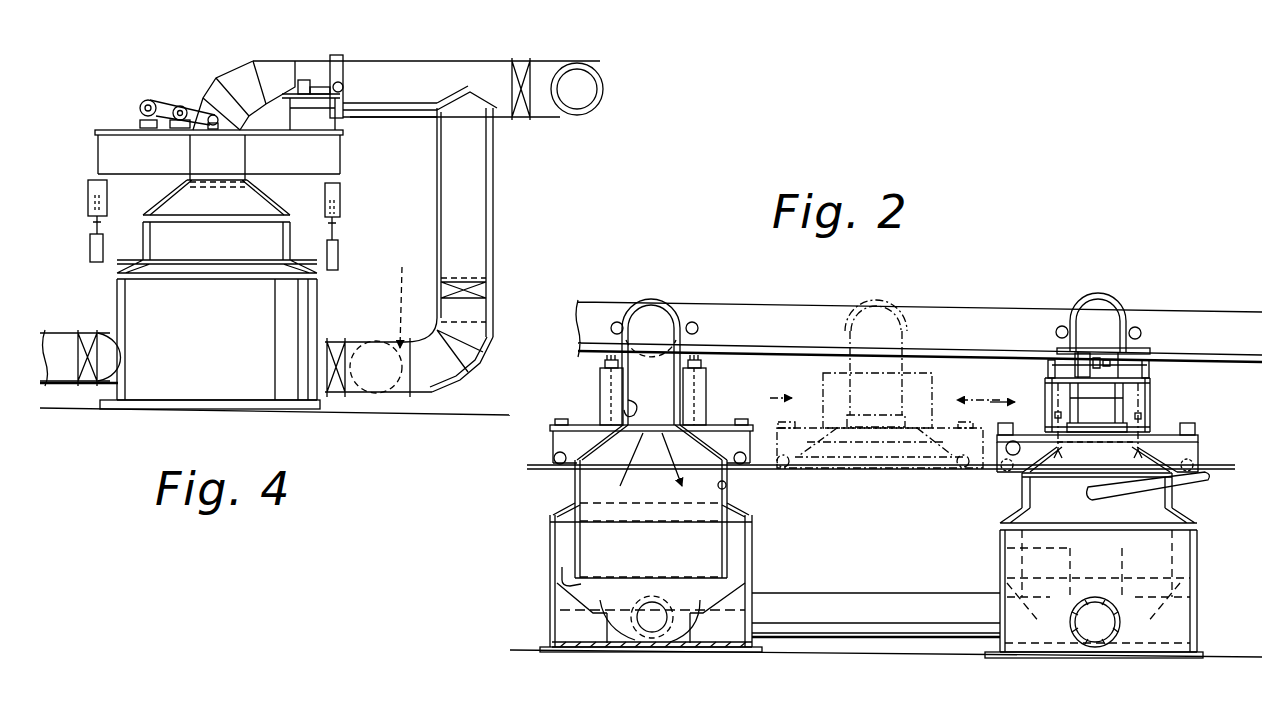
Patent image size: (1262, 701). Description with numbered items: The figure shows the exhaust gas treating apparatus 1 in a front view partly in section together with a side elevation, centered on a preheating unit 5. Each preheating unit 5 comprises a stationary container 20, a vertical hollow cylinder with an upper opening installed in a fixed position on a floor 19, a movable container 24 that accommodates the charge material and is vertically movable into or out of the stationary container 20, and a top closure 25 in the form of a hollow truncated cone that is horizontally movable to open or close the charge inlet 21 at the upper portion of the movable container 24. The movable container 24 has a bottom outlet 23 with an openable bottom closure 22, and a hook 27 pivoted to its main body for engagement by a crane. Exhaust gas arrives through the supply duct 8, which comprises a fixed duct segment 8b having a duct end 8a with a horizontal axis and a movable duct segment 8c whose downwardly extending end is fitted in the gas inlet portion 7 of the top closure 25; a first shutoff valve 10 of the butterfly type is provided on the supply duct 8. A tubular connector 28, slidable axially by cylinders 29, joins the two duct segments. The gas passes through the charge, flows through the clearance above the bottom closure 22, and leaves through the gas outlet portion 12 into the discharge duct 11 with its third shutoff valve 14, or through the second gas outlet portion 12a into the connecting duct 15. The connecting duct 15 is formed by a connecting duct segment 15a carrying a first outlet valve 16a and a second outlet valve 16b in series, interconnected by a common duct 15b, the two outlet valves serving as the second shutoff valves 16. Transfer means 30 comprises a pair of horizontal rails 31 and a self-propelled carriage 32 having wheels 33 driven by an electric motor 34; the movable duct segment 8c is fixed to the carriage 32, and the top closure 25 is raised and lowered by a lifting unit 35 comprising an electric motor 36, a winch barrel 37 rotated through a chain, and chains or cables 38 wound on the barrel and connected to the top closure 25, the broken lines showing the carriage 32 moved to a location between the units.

In FIG. 4, the exhaust gas treating apparatus 1 is at (386, 56).
In FIG. 2, the exhaust gas treating apparatus 1 is at (1198, 384).
In FIG. 4, the preheating unit 5 is at (323, 300).
In FIG. 2, the preheating unit 5 is at (757, 545).
In FIG. 2, the gas inlet portion 7 is at (622, 409).
In FIG. 4, the supply duct 8 is at (431, 61).
In FIG. 2, the supply duct 8 is at (679, 309).
In FIG. 4, the duct end 8a is at (356, 118).
In FIG. 4, the fixed duct segment 8b is at (402, 118).
In FIG. 4, the movable duct segment 8c is at (241, 61).
In FIG. 2, the movable duct segment 8c is at (730, 345).
In FIG. 4, the first shutoff valve 10 is at (531, 61).
In FIG. 4, the discharge duct 11 is at (62, 332).
In FIG. 2, the discharge duct 11 is at (1118, 613).
In FIG. 4, the gas outlet portion 12 is at (118, 346).
In FIG. 2, the gas outlet portion 12 is at (1117, 633).
In FIG. 4, the second gas outlet portion 12a is at (319, 340).
In FIG. 2, the second gas outlet portion 12a is at (661, 604).
In FIG. 4, the third shutoff valve 14 is at (89, 332).
In FIG. 4, the connecting duct 15 is at (434, 264).
In FIG. 2, the connecting duct 15 is at (750, 611).
In FIG. 4, the connecting duct segment 15a is at (495, 216).
In FIG. 2, the connecting duct segment 15a is at (1007, 558).
In FIG. 4, the common duct 15b is at (397, 348).
In FIG. 2, the common duct 15b is at (893, 594).
In FIG. 4, the second shutoff valve 16 is at (490, 312).
In FIG. 4, the first outlet valve 16a is at (341, 397).
In FIG. 4, the second outlet valve 16b is at (495, 291).
In FIG. 4, the floor 19 is at (488, 414).
In FIG. 2, the floor 19 is at (918, 650).
In FIG. 4, the stationary container 20 is at (117, 285).
In FIG. 2, the stationary container 20 is at (752, 566).
In FIG. 2, the charge inlet 21 is at (727, 485).
In FIG. 2, the bottom closure 22 is at (731, 603).
In FIG. 2, the bottom outlet 23 is at (592, 561).
In FIG. 4, the movable container 24 is at (146, 228).
In FIG. 2, the movable container 24 is at (735, 502).
In FIG. 4, the top closure 25 is at (244, 197).
In FIG. 2, the top closure 25 is at (688, 430).
In FIG. 2, the hook 27 is at (1186, 483).
In FIG. 2, the tubular connector 28 is at (690, 312).
In FIG. 2, the cylinders 29 is at (703, 330).
In FIG. 4, the transfer means 30 is at (113, 128).
In FIG. 2, the transfer means 30 is at (786, 450).
In FIG. 4, the horizontal rails 31 is at (339, 226).
In FIG. 2, the horizontal rails 31 is at (887, 473).
In FIG. 4, the carriage 32 is at (89, 180).
In FIG. 2, the carriage 32 is at (560, 457).
In FIG. 2, the wheels 33 is at (552, 464).
In FIG. 2, the electric motor 34 is at (1018, 440).
In FIG. 4, the lifting unit 35 is at (167, 97).
In FIG. 2, the lifting unit 35 is at (1062, 352).
In FIG. 2, the electric motor 36 is at (1092, 322).
In FIG. 2, the winch barrel 37 is at (1135, 358).
In FIG. 2, the chains or cables 38 is at (1138, 407).